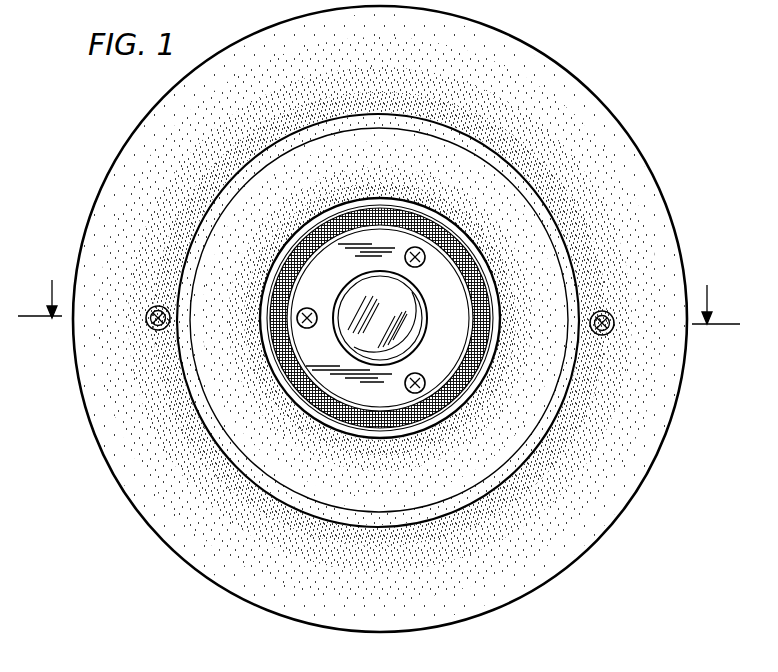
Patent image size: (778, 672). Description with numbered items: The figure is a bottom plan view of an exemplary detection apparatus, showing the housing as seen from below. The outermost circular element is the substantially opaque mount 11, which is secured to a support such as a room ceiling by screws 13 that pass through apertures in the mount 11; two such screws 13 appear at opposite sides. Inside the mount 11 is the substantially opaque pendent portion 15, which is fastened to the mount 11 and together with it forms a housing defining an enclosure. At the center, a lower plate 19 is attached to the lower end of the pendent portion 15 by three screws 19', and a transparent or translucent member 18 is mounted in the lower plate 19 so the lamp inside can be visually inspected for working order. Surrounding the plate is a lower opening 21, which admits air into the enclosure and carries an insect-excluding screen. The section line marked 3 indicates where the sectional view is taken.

The mount 11 is at (176, 527).
The screws 13 is at (147, 323).
The pendent portion 15 is at (441, 145).
The transparent or translucent member 18 is at (357, 337).
The lower plate 19 is at (320, 337).
The screws 19' is at (384, 328).
The lower openings 21 is at (477, 340).
The section line 3- 3 is at (379, 298).